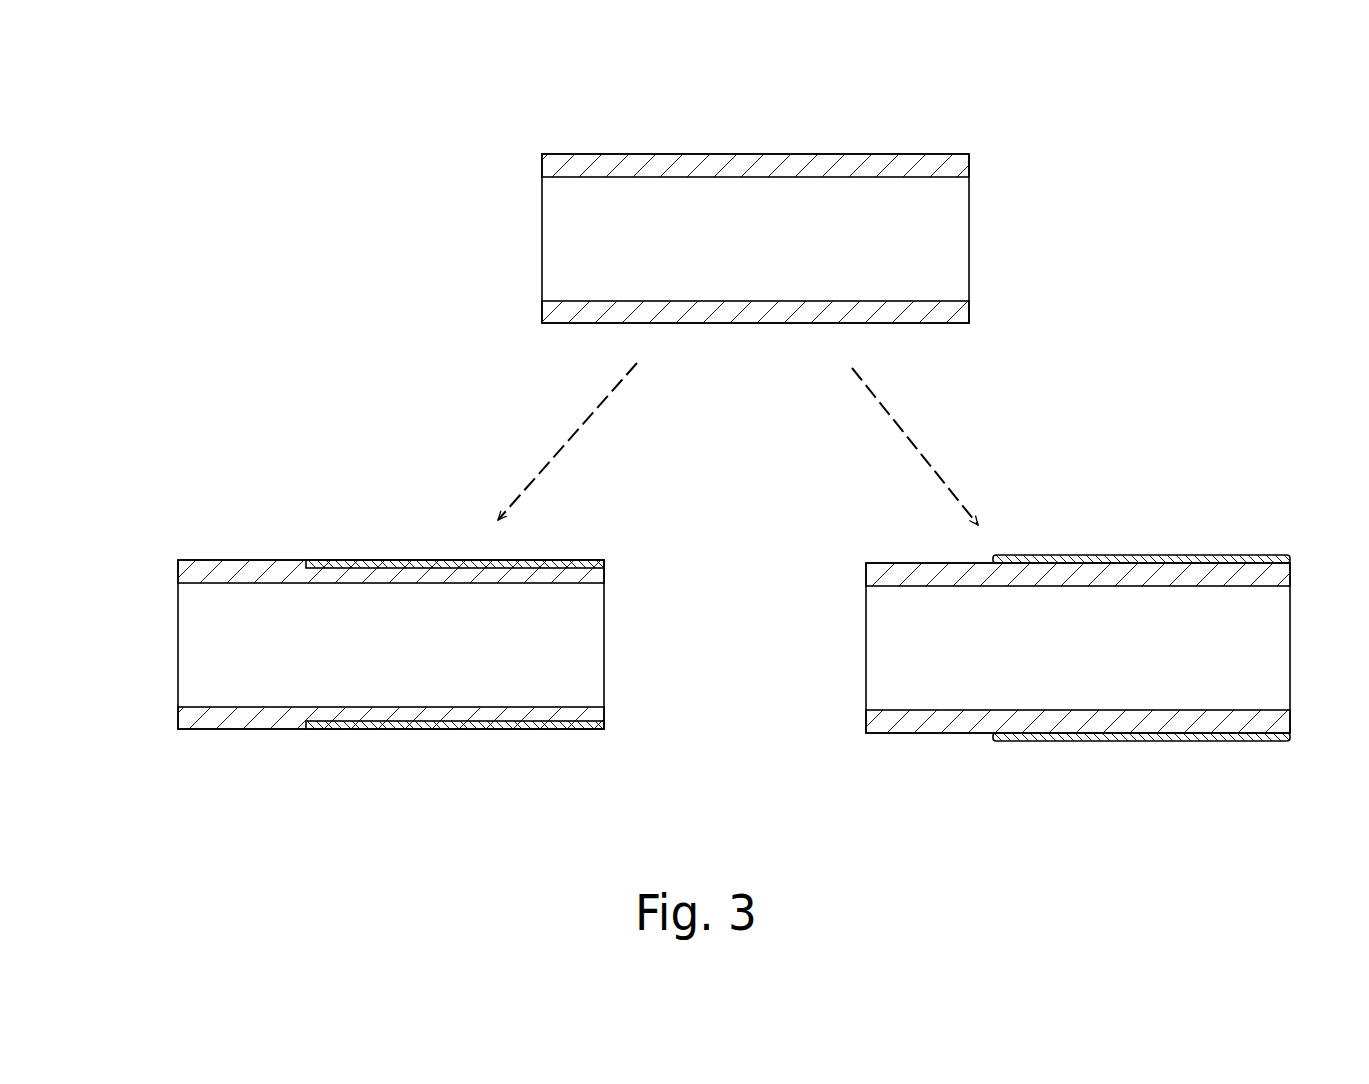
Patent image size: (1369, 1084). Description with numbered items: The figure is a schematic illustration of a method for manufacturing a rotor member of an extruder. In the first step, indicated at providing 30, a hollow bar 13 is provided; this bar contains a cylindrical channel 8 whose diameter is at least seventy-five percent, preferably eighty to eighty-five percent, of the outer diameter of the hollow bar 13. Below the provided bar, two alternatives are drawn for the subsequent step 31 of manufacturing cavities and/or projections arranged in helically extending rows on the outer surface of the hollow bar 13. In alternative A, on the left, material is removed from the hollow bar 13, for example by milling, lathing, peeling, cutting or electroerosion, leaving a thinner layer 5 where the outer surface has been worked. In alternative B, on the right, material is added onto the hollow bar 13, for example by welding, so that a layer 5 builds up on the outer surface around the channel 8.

The providing step 30 is at (467, 261).
The coating step 31 is at (383, 390).
The cylindrical channel 8 is at (742, 263).
The hollow bar 13 is at (755, 167).
The coating layer 5 is at (415, 566).